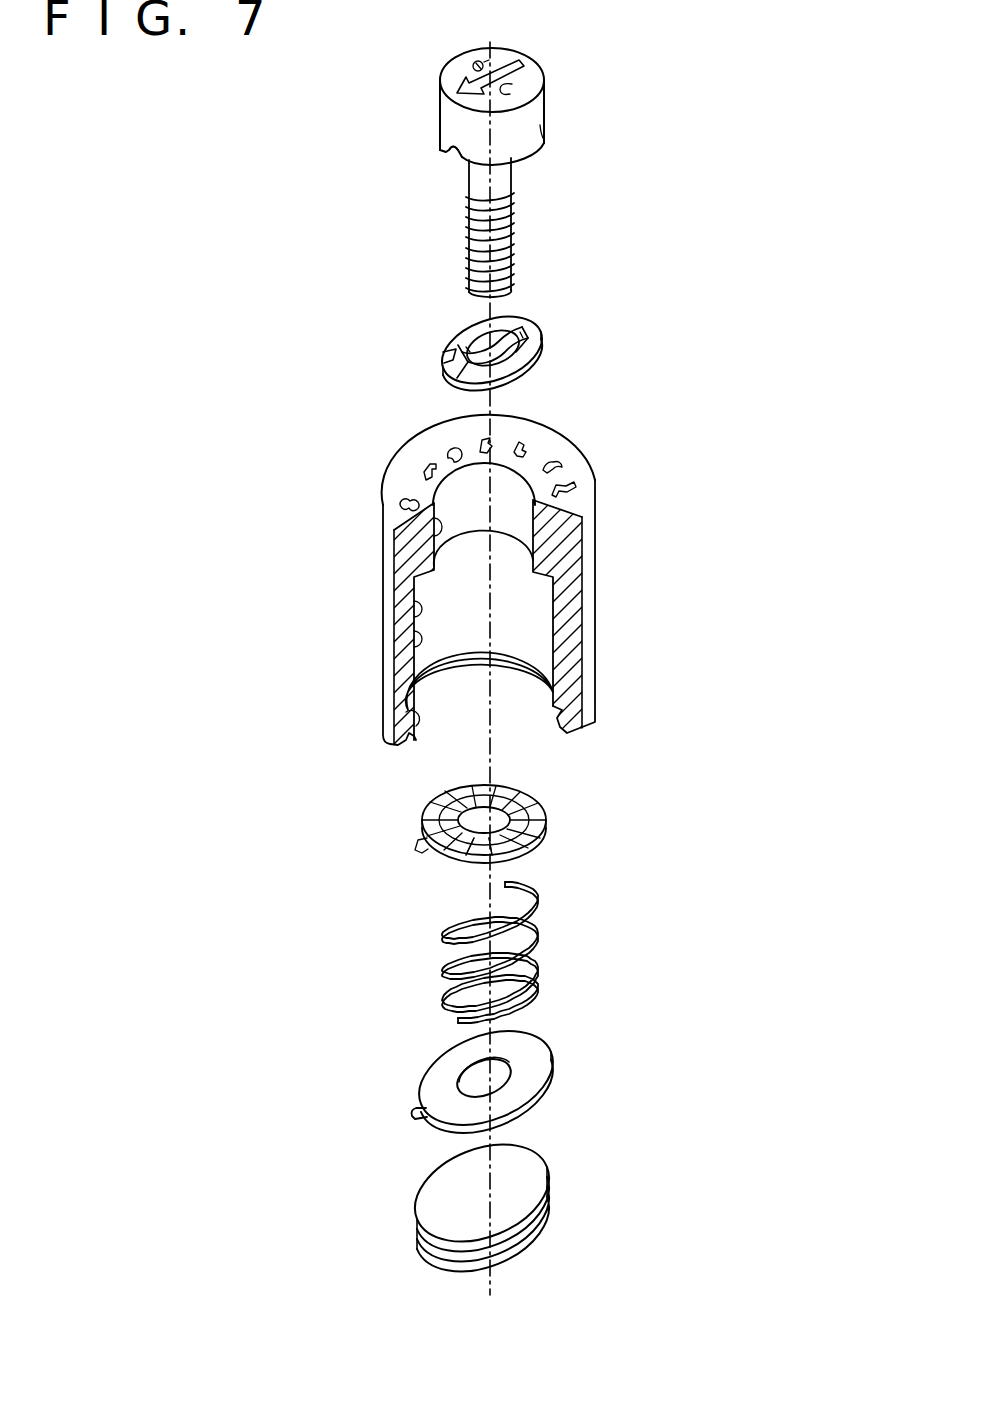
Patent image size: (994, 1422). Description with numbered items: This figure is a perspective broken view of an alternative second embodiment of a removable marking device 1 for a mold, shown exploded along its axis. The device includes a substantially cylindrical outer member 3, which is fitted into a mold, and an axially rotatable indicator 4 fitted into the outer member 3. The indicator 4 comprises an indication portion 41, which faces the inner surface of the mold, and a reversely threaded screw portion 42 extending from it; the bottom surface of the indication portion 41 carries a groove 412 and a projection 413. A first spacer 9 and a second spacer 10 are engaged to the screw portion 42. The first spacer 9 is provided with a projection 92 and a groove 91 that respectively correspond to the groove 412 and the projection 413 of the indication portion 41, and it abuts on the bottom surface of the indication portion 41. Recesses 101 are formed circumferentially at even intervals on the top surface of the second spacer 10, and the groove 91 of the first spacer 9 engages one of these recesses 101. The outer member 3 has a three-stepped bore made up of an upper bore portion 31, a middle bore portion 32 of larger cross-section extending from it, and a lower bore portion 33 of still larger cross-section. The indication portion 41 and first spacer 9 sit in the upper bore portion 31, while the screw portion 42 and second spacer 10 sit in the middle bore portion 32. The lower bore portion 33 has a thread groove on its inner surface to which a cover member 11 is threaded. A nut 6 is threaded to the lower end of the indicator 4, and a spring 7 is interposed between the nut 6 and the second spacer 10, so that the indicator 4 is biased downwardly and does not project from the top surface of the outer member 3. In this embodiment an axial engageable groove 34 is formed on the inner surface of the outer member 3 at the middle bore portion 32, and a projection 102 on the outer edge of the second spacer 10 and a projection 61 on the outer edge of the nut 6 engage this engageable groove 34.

The removable marking device 1 is at (664, 378).
The outer member 3 is at (501, 587).
The upper bore portion 31 is at (423, 547).
The middle bore portion 32 is at (413, 620).
The lower bore portion 33 is at (410, 724).
The engageable groove 34 is at (410, 651).
The indicator 4 is at (509, 172).
The indication portion 41 is at (532, 109).
The screw portion 42 is at (508, 203).
The groove 412 is at (456, 156).
The projection 413 is at (543, 145).
The nut 6 is at (481, 1078).
The projection 61 is at (415, 1108).
The spring 7 is at (540, 933).
The first spacer 9 is at (486, 341).
The groove 91 is at (522, 323).
The projection 92 is at (450, 352).
The second spacer 10 is at (477, 830).
The recesses 101 is at (430, 822).
The projection 102 is at (420, 850).
The cover member 11 is at (537, 1180).